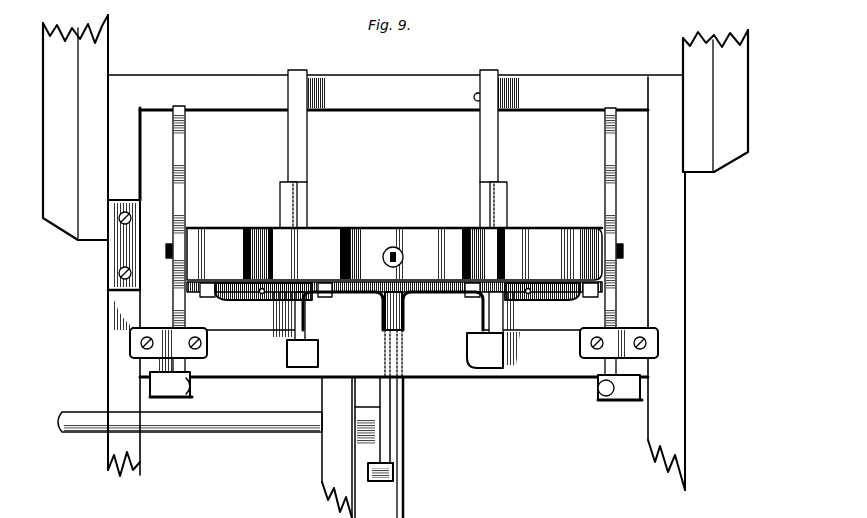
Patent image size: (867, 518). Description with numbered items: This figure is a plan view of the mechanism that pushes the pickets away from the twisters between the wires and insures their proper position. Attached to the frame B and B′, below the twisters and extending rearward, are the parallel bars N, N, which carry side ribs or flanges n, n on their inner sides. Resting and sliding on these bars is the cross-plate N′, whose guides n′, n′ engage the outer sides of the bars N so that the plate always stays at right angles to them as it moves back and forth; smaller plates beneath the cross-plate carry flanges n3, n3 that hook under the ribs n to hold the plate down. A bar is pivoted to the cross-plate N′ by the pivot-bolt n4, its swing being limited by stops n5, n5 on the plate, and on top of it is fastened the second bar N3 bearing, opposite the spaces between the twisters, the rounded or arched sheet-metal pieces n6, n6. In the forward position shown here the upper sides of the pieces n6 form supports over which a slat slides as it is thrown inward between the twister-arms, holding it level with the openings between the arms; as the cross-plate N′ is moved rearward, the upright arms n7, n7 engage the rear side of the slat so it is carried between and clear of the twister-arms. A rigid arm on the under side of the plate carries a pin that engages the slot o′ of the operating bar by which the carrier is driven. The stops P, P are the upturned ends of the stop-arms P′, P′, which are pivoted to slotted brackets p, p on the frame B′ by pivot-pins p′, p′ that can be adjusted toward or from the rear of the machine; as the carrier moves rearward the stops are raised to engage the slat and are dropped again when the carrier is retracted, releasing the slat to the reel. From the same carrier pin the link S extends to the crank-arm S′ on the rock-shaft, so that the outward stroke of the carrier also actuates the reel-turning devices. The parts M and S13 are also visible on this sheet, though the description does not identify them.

The frame B is at (108, 333).
The frame B′ is at (690, 356).
The bearing block M is at (108, 263).
The stop P is at (186, 128).
The stop-arm P′ is at (620, 182).
The parallel bar N is at (300, 143).
The side rib n is at (306, 195).
The guide n′ is at (281, 208).
The rounded or arched piece n6 is at (216, 231).
The second bar N3 is at (385, 232).
The pivot-bolt n4 is at (399, 250).
The flange n3 is at (166, 250).
The upright arm n7 is at (206, 293).
The stop n5 is at (255, 298).
The cross-plate N′ is at (478, 350).
The bracket p is at (160, 388).
The pivot-pin p′ is at (194, 388).
The shaft S13 is at (244, 433).
The link S is at (380, 395).
The crank-arm S′ is at (380, 482).
The slot o′ is at (386, 447).